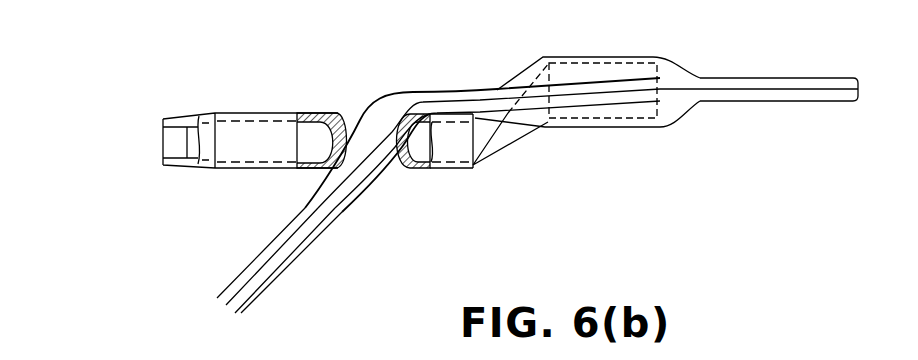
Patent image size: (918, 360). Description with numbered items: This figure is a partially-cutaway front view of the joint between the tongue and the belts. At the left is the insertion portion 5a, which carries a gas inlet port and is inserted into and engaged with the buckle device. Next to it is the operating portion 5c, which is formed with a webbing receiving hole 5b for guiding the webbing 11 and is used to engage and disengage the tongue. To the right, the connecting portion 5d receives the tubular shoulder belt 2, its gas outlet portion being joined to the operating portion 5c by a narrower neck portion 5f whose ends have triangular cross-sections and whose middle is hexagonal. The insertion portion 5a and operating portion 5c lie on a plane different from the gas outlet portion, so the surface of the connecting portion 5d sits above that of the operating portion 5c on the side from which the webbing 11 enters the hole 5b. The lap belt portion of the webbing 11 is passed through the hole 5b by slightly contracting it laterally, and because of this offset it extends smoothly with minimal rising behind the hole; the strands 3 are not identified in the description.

The shoulder belt 2 is at (750, 102).
The optical fiber bundle 3 is at (289, 257).
The insertion portion 5a is at (240, 137).
The webbing receiving hole 5b is at (343, 122).
The operating portion 5c is at (447, 170).
The connecting portion 5d is at (609, 128).
The neck portion 5f is at (505, 147).
The webbing 11 is at (405, 86).